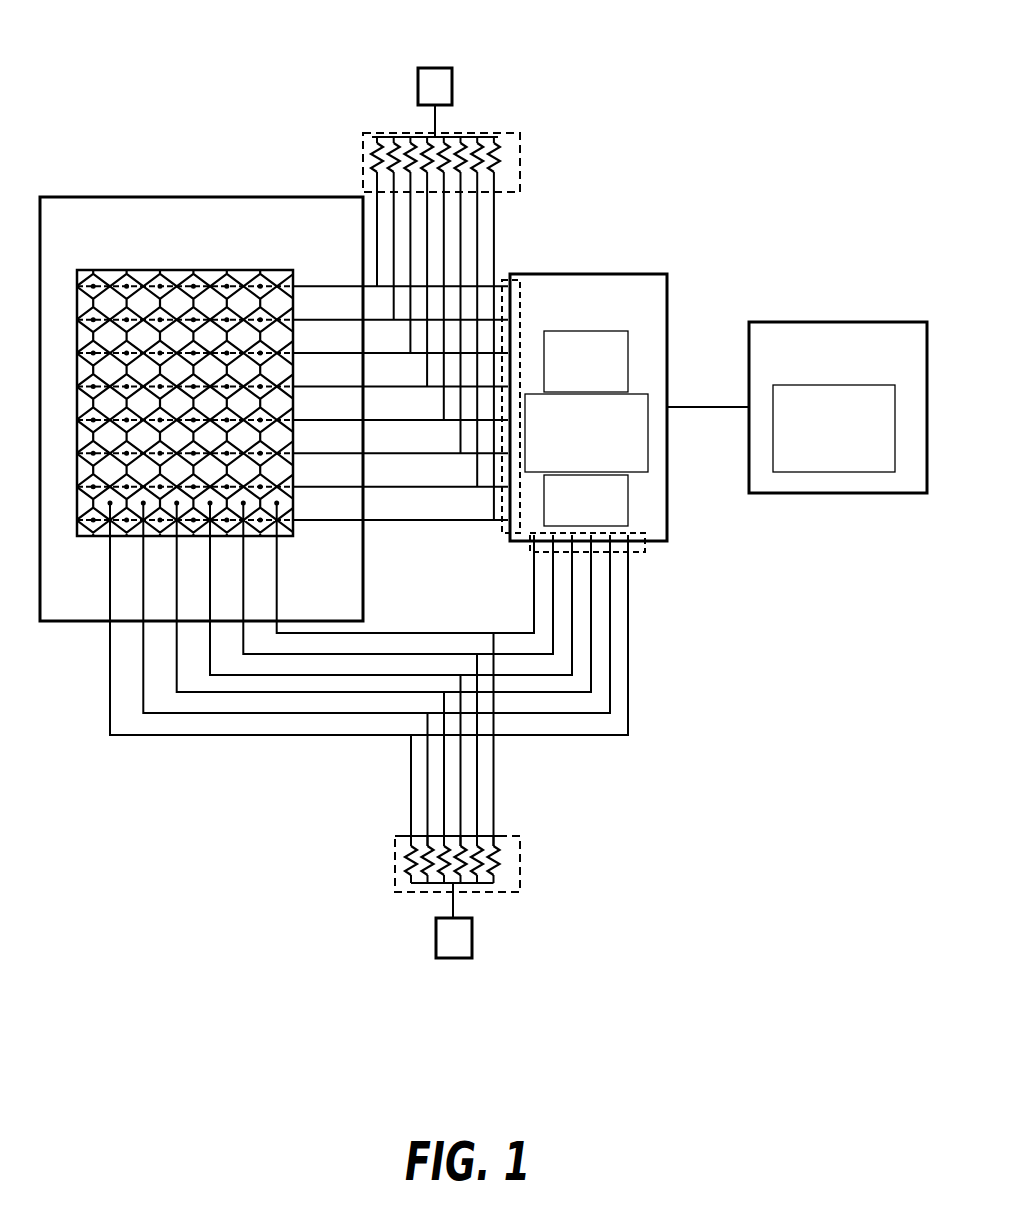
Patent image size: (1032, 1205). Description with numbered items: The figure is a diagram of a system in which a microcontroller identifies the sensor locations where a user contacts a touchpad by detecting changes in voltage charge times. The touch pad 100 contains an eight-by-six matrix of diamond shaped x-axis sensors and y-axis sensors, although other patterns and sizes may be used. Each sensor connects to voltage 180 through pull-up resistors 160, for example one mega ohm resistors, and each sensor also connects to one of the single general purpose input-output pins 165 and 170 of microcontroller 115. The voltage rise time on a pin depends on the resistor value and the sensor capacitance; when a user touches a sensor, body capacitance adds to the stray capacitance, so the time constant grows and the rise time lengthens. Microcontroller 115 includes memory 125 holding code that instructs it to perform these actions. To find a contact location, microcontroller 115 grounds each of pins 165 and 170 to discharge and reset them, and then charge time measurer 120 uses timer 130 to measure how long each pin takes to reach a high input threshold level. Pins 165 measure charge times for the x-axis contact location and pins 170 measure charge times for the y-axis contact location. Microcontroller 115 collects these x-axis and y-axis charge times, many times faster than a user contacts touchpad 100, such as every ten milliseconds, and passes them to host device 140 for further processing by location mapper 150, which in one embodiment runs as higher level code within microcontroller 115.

The touch pad 100 is at (201, 409).
The microcontroller 115 is at (588, 407).
The charge time measurer 120 is at (586, 433).
The memory 125 is at (586, 361).
The timer 130 is at (586, 500).
The host device 140 is at (838, 407).
The location mapper 150 is at (834, 428).
The pull-up resistors 160 is at (560, 843).
The pins 165 is at (517, 285).
The pins 170 is at (645, 552).
The voltage 180 is at (545, 962).